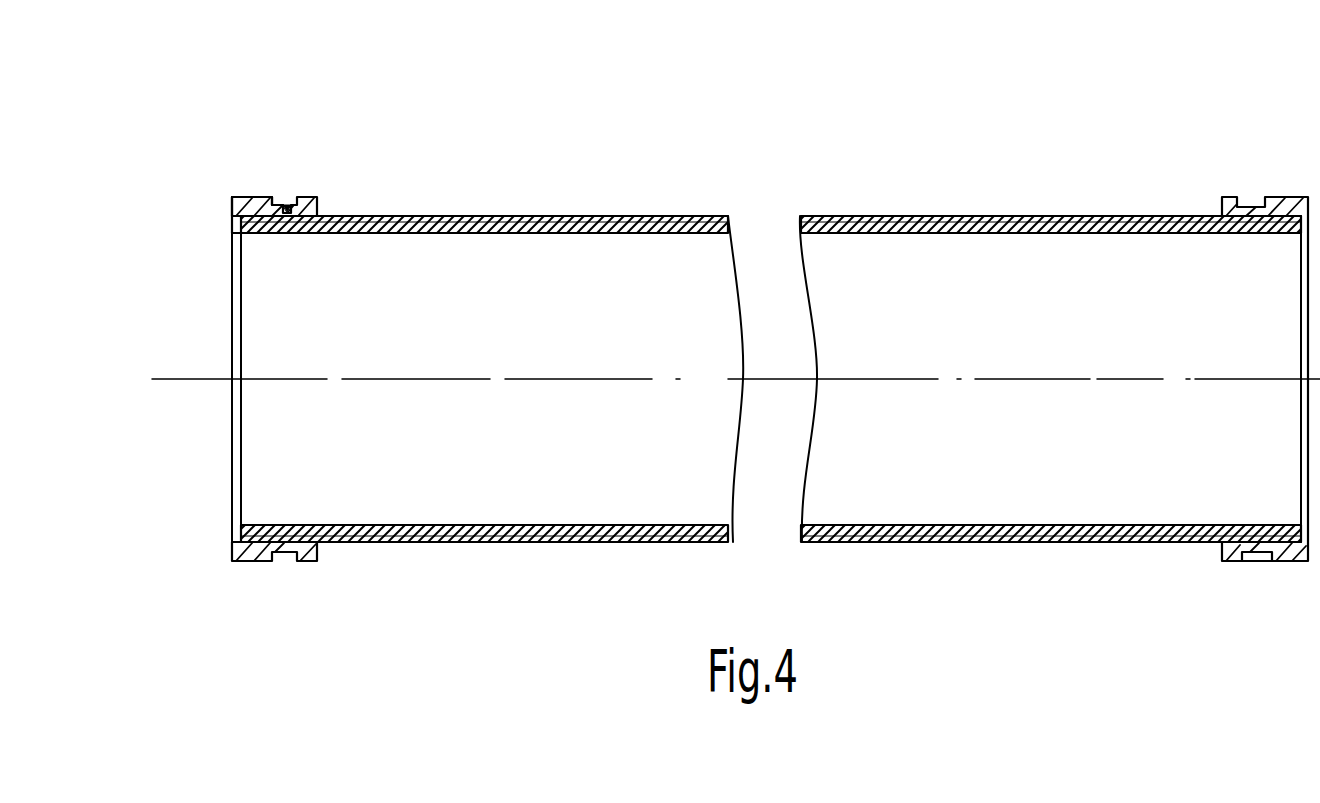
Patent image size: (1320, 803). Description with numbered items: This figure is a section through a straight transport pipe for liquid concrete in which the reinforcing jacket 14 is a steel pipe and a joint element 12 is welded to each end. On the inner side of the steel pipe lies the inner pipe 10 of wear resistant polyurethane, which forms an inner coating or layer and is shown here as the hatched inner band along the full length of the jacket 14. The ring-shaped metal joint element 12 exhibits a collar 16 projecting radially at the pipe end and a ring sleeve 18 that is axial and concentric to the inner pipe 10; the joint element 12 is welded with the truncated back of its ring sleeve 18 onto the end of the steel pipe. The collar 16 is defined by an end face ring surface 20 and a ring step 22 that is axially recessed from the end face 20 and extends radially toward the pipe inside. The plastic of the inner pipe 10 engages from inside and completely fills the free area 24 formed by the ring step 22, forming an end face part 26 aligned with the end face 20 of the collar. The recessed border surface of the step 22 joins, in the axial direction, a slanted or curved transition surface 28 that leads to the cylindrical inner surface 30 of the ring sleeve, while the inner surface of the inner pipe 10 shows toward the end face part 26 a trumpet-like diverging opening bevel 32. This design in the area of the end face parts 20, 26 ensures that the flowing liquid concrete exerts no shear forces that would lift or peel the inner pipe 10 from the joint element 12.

The inner pipe 10 is at (482, 222).
The joint element 12 is at (296, 204).
The reinforcing jacket 14 is at (592, 219).
The collar 16 is at (258, 197).
The ring sleeve 18 is at (284, 204).
The end face ring surface 20 is at (232, 203).
The ring step 22 is at (232, 543).
The free area 24 is at (183, 554).
The end face part 26 is at (232, 222).
The transition surface 28 is at (243, 233).
The inner surface 30 is at (280, 235).
The opening bevel 32 is at (232, 437).